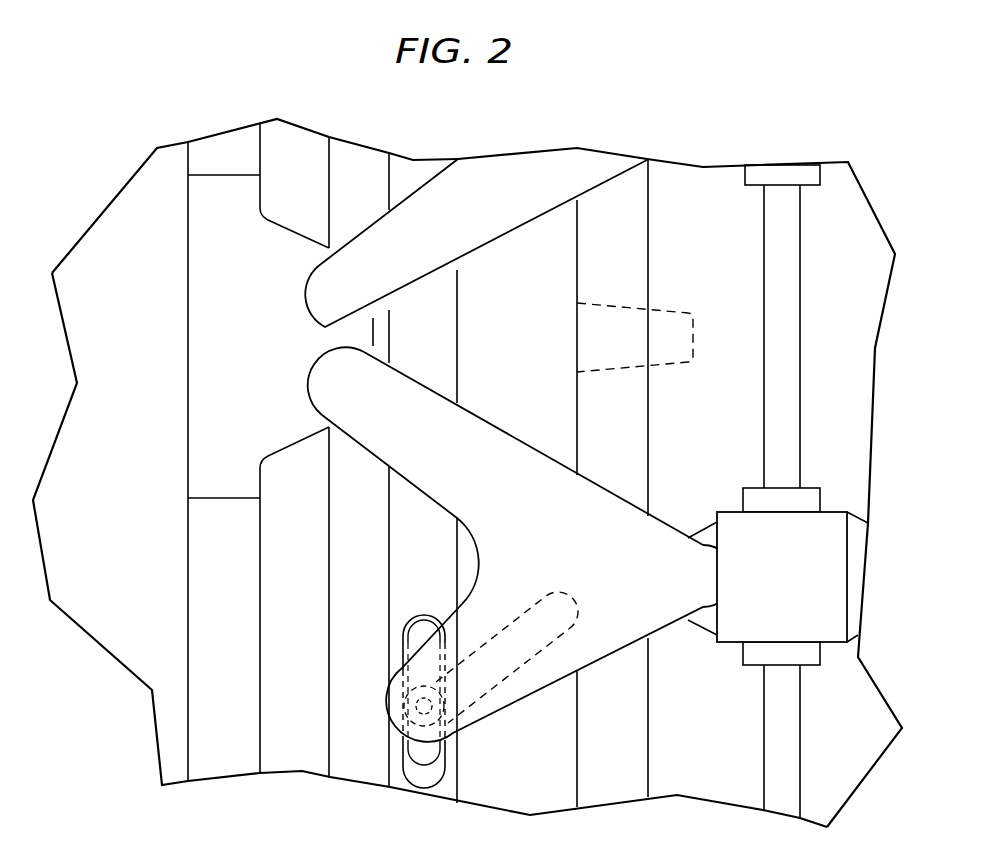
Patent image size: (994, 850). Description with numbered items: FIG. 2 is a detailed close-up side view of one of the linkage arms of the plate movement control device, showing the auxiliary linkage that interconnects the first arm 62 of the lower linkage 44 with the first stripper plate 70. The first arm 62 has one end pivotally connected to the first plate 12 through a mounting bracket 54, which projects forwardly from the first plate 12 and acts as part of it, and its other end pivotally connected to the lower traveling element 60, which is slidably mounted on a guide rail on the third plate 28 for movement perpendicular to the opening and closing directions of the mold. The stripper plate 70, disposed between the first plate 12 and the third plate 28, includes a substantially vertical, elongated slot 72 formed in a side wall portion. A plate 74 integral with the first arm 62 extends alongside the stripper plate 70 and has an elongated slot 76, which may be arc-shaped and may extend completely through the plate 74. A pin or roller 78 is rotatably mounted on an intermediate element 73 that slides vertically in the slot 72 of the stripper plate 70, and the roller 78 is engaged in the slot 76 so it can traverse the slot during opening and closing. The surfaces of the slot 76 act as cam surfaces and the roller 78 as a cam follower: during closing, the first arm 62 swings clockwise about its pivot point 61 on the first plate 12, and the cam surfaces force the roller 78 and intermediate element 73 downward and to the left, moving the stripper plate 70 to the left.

The first plate 12 is at (217, 158).
The third plate 28 is at (688, 203).
The lower linkage 44 is at (835, 670).
The mounting bracket 54 is at (188, 258).
The lower traveling element 60 is at (826, 527).
The pivot point 61 is at (347, 378).
The first arm 62 is at (478, 557).
The stripper plate 70 is at (404, 171).
The slot 72 is at (427, 617).
The intermediate element 73 is at (404, 750).
The plate 74 is at (584, 657).
The elongated slot 76 is at (561, 590).
The roller 78 is at (395, 692).